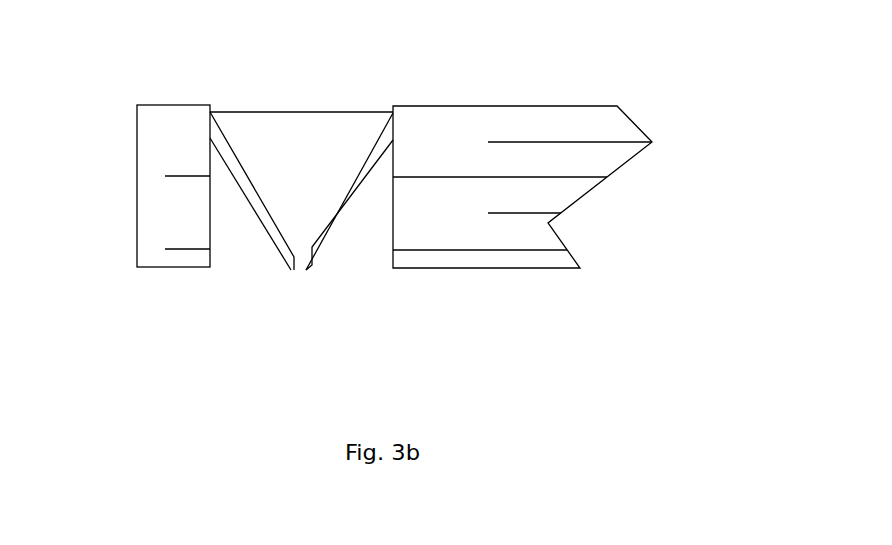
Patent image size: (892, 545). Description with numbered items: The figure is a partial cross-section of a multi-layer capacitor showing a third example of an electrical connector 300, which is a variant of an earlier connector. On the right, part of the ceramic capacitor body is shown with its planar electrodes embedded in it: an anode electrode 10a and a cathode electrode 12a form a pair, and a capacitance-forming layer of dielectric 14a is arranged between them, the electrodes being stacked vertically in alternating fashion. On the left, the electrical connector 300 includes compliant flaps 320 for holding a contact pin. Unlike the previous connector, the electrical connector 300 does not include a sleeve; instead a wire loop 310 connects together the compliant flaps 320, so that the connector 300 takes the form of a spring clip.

The electrical connector 300 is at (266, 92).
The wire loop 310 is at (358, 110).
The compliant flaps 320 is at (322, 237).
The anode electrode 10a is at (587, 182).
The cathode electrode 12a is at (610, 140).
The capacitance-forming dielectric layer 14a is at (500, 164).